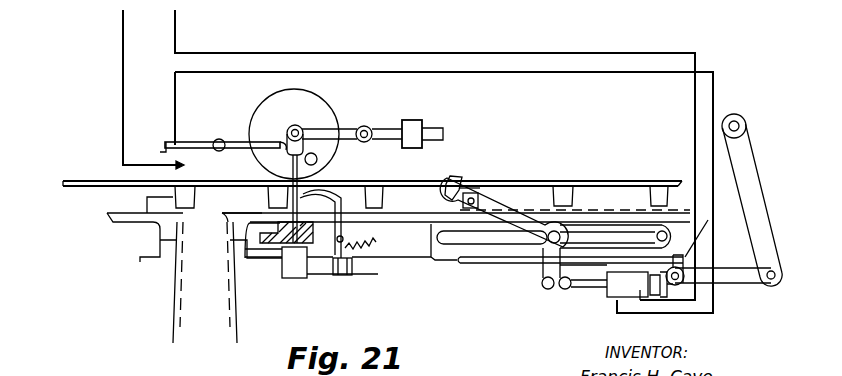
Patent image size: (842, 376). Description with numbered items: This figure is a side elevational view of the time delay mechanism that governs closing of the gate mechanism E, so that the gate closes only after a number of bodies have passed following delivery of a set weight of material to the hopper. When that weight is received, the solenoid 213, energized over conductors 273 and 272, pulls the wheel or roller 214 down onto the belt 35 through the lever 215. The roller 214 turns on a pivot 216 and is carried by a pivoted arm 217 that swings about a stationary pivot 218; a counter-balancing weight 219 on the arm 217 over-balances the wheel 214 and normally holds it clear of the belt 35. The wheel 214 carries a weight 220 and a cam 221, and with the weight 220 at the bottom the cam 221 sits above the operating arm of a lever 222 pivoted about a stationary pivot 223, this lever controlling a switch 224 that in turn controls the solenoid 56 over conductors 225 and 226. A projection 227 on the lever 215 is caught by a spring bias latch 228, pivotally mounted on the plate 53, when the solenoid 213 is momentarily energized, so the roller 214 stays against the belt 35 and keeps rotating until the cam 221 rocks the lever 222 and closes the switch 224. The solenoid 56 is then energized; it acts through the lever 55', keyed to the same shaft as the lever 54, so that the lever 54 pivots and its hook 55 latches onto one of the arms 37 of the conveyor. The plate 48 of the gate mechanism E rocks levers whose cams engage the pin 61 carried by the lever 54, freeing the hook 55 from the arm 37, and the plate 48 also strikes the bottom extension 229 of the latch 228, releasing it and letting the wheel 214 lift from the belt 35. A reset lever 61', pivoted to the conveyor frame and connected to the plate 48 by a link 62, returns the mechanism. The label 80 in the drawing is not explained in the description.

The conductor 226 is at (122, 43).
The conductor 225 is at (330, 52).
The mechanism assembly 80 is at (735, 158).
The wheel or roller 214 is at (288, 92).
The pivot 216 is at (301, 128).
The cam 221 is at (285, 146).
The stationary pivot 218 is at (374, 133).
The pivoted arm 217 is at (352, 129).
The counter-balancing weight 219 is at (415, 127).
The weight 220 is at (318, 159).
The lever 222 is at (237, 142).
The switch 224 is at (160, 152).
The stationary pivot 223 is at (218, 151).
The lever 215 is at (288, 178).
The belt 35 is at (353, 180).
The projection 227 is at (296, 197).
The solenoid 213 is at (296, 272).
The spring bias latch 228 is at (334, 224).
The bottom extension 229 is at (346, 278).
The conductor 273 is at (374, 252).
The conductor 272 is at (378, 274).
The plate 53 is at (408, 262).
The gate mechanism E is at (447, 270).
The plate 48 is at (480, 266).
The lever 54 is at (518, 217).
The hook 55 is at (465, 165).
The arm 37 is at (473, 183).
The pin 61 is at (439, 200).
The lever 55' is at (556, 289).
The solenoid 56 is at (625, 283).
The link 62 is at (742, 277).
The reset lever 61' is at (766, 200).